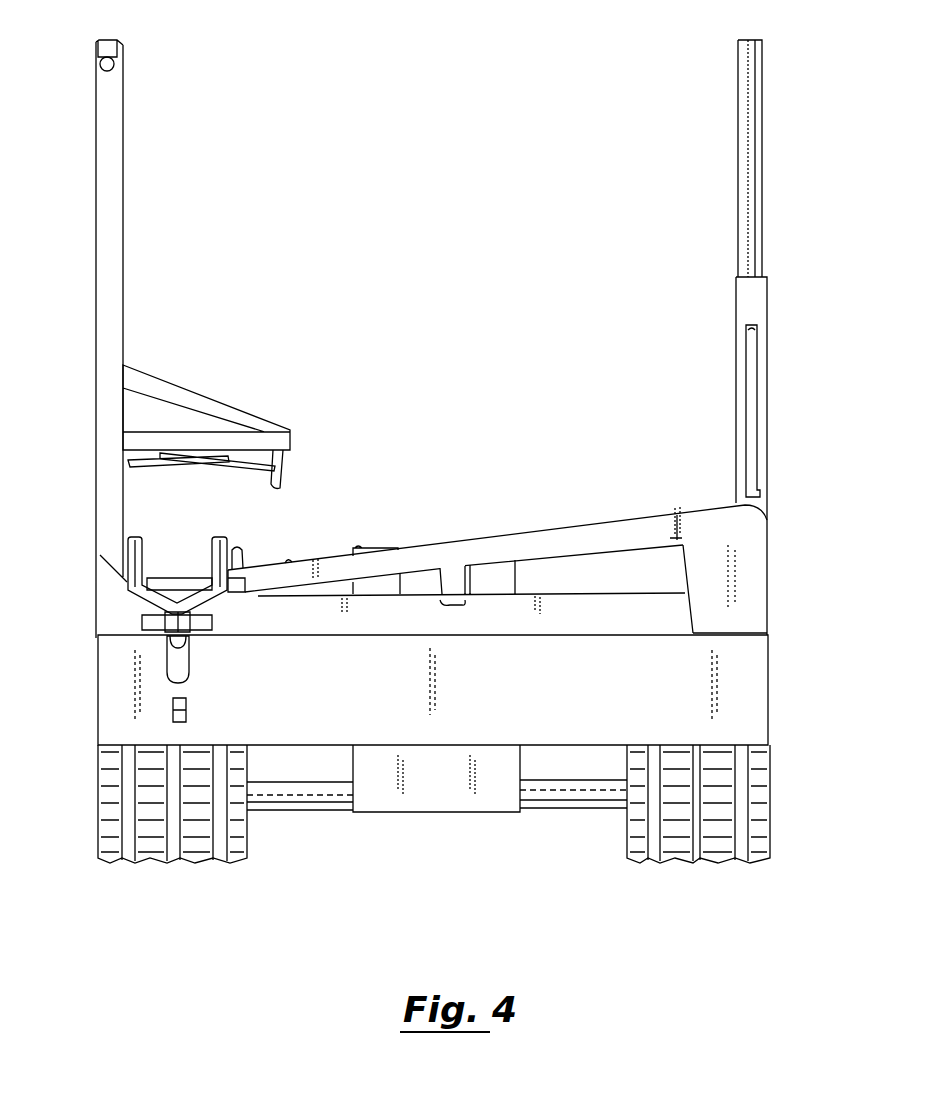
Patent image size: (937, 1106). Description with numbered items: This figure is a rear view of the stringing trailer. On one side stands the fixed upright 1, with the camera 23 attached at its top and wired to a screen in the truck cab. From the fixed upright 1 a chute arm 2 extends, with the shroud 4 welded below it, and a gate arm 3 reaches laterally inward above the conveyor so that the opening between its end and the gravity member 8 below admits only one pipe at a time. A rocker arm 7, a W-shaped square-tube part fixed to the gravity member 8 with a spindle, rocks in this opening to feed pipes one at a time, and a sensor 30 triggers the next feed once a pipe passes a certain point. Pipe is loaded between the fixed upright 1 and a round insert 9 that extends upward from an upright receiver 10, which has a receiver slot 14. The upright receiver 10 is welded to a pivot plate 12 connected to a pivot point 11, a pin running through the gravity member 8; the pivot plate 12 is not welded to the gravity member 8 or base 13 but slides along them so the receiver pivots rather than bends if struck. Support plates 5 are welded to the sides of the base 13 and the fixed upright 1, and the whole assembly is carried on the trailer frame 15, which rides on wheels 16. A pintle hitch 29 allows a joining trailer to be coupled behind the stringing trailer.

The fixed upright 1 is at (108, 246).
The camera 23 is at (115, 65).
The chute arm 2 is at (200, 378).
The gate arm 3 is at (283, 478).
The shroud 4 is at (205, 455).
The support plate 5 is at (113, 599).
The rocker arm 7 is at (244, 553).
The sensor 30 is at (248, 585).
The pintle hitch 29 is at (188, 711).
The gravity member 8 is at (495, 540).
The trailer frame 15 is at (502, 582).
The base 13 is at (610, 612).
The pivot point 11 is at (693, 557).
The pivot plate 12 is at (720, 530).
The round insert 9 is at (748, 135).
The upright receiver 10 is at (760, 295).
The receiver slot 14 is at (757, 412).
The wheel 16 is at (665, 820).